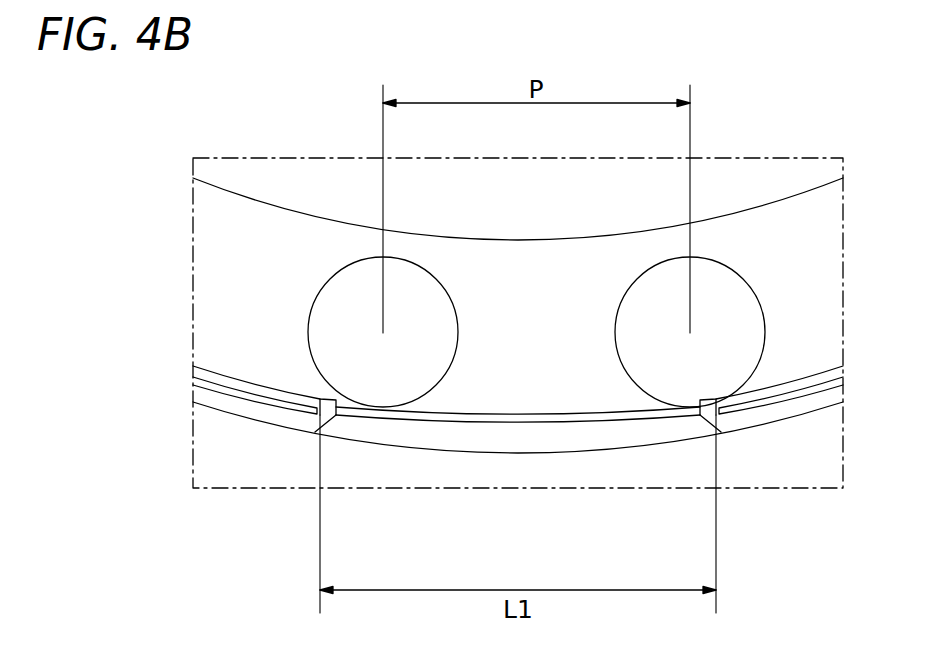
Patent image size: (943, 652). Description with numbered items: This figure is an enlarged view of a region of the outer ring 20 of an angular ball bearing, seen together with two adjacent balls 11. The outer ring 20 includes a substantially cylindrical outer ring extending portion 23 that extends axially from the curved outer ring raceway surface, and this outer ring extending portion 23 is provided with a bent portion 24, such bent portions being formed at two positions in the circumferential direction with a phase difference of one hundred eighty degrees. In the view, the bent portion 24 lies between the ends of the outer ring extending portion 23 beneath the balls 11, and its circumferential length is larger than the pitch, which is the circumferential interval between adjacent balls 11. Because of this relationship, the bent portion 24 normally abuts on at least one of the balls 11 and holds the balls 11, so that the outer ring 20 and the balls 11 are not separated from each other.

The balls 11 is at (335, 323).
The outer ring 20 is at (752, 429).
The outer ring extending portion 23 is at (255, 412).
The bent portion 24 is at (489, 437).